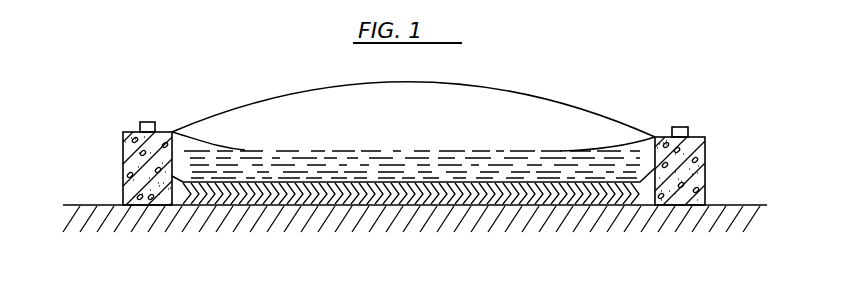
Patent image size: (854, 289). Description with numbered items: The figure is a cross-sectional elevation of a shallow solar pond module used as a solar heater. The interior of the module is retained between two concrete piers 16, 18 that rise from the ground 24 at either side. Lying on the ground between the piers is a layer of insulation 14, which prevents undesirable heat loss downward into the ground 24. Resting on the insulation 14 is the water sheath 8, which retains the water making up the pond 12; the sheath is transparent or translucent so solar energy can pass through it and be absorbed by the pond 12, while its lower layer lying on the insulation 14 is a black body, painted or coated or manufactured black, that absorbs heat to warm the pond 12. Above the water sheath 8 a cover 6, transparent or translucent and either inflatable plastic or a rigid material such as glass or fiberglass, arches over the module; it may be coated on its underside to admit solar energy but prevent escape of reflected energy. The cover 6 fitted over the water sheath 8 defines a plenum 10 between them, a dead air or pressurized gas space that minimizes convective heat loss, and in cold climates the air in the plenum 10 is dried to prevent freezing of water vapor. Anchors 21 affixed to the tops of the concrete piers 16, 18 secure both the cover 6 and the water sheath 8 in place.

The cover 6 is at (413, 90).
The water sheath 8 is at (326, 145).
The plenum 10 is at (270, 115).
The pond 12 is at (495, 146).
The insulation 14 is at (380, 195).
The concrete pier 16 is at (650, 186).
The concrete pier 18 is at (135, 160).
The anchors 21 is at (146, 124).
The ground 24 is at (605, 210).